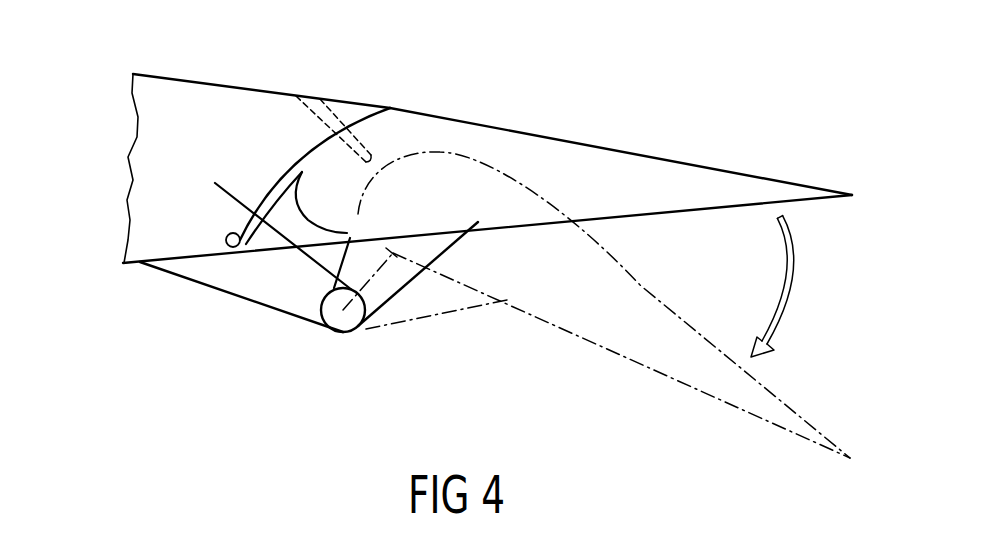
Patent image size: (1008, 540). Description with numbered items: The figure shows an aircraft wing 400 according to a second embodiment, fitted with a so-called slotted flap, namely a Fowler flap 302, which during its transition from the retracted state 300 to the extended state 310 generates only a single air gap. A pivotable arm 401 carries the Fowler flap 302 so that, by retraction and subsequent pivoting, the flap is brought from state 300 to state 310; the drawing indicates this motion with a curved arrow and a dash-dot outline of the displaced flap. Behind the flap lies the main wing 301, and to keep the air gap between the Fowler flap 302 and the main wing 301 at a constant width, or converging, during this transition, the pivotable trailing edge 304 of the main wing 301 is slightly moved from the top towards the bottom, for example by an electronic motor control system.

The aircraft wing 400 is at (806, 66).
The main wing 301 is at (157, 142).
The Fowler flap 302 is at (662, 174).
The pivotable trailing edge 304 is at (390, 107).
The pivotable arm 401 is at (384, 287).
The retracted state 300 is at (778, 225).
The extended state 310 is at (758, 358).